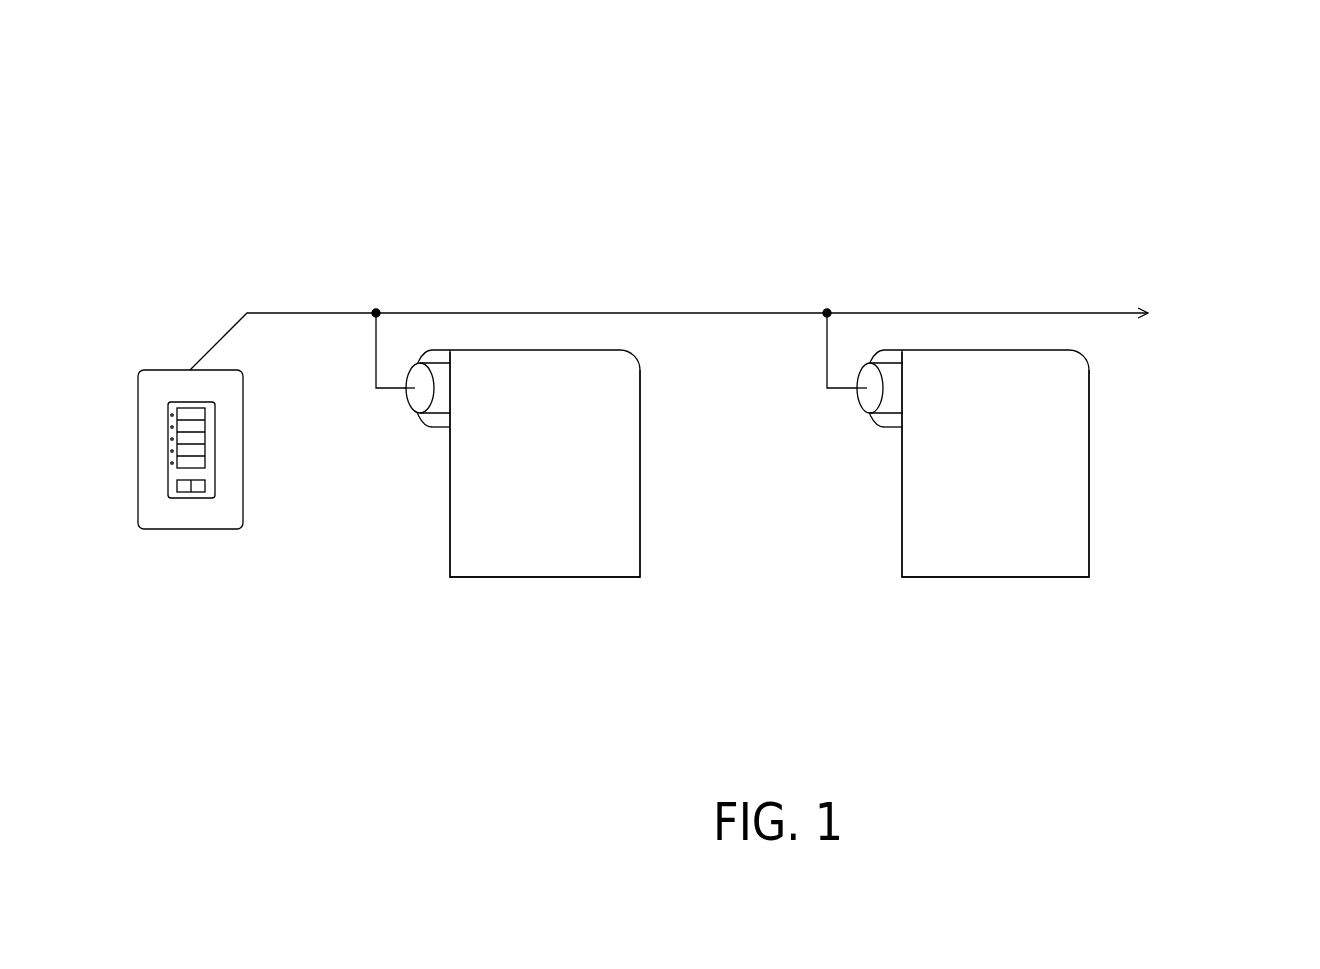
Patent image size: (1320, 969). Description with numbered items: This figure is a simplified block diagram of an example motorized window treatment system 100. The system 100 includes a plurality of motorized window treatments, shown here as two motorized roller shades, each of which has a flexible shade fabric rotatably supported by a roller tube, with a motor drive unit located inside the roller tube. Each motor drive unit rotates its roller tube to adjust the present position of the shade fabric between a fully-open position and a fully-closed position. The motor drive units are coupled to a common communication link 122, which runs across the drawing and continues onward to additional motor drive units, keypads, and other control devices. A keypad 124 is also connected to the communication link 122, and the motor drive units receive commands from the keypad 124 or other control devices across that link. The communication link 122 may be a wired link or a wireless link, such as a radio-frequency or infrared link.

The motorized window treatment system 100 is at (678, 107).
The communication link 122 is at (397, 313).
The keypad 124 is at (158, 370).